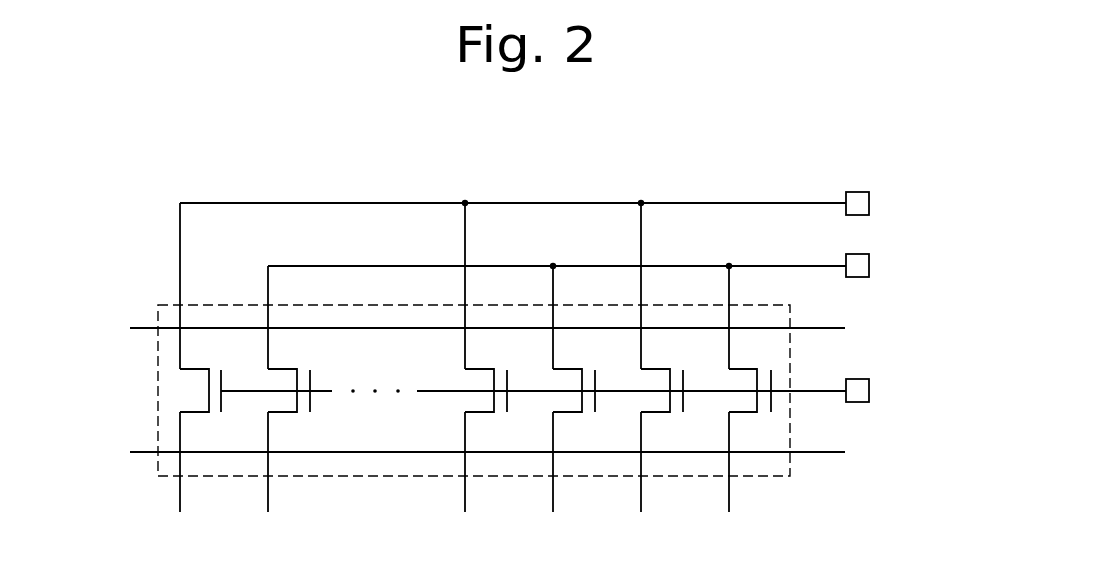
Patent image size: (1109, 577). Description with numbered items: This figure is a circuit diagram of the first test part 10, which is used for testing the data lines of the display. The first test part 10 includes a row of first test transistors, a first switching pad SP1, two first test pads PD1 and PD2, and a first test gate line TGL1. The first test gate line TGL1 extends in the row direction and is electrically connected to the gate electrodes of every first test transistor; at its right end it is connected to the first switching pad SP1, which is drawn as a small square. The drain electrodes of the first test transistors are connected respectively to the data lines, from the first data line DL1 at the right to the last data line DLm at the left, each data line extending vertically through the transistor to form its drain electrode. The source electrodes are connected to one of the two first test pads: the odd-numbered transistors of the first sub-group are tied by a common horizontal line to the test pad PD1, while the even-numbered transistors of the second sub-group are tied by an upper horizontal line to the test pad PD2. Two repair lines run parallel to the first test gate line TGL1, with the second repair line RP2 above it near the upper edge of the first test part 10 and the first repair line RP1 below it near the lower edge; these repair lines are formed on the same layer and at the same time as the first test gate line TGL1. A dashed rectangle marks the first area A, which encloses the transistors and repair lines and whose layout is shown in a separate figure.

The first test part 10 is at (496, 178).
The test pad PD2 is at (869, 203).
The test pad PD1 is at (869, 266).
The second repair line RP2 is at (815, 328).
The first test gate line TGL1 is at (813, 391).
The first switching pad SP1 is at (869, 391).
The first repair line RP1 is at (813, 452).
The data line DLm is at (178, 371).
The first area A is at (514, 478).
The data line DL1 is at (726, 402).